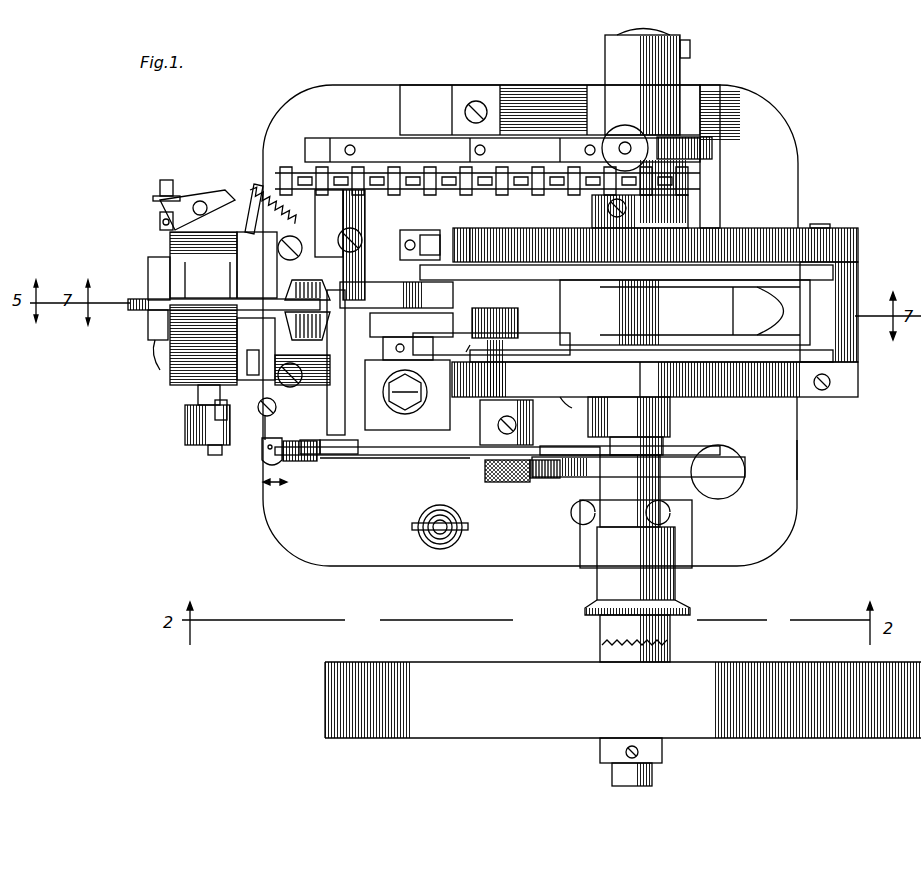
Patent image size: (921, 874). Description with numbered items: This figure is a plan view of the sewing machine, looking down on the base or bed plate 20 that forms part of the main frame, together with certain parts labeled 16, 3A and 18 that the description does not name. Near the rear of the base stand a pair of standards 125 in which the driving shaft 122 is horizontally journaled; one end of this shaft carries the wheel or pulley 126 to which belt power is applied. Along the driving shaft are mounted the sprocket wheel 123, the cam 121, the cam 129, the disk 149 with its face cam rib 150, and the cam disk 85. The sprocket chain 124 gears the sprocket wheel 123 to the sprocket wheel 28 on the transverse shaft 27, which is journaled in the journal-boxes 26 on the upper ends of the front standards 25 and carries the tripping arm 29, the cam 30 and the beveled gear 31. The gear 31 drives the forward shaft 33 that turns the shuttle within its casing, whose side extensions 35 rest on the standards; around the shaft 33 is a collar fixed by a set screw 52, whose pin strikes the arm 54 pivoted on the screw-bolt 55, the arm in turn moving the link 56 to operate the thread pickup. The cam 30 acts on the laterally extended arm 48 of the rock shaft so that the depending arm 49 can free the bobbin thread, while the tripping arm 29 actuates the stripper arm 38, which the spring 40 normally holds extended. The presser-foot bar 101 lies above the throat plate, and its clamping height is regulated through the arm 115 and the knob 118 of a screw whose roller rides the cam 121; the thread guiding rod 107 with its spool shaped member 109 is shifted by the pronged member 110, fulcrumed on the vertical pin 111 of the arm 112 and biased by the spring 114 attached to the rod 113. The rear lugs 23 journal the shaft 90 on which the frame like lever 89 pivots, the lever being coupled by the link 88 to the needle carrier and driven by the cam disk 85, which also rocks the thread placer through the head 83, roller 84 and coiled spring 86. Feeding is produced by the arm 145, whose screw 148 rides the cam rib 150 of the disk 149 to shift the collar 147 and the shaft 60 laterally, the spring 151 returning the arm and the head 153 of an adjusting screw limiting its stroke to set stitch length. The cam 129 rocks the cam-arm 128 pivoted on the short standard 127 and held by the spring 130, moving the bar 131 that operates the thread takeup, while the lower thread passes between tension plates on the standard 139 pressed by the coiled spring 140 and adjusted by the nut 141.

The housing 16 is at (272, 140).
The base or bed plate 20 is at (785, 493).
The tripping arm 29 is at (251, 484).
The standards 125 is at (685, 78).
The arm 115 is at (420, 148).
The sprocket chain 124 is at (537, 170).
The sprocket wheel 123 is at (700, 188).
The disk or knob 118 is at (630, 138).
The cam 121 is at (712, 150).
The lugs 23 is at (858, 245).
The cam disk 85 is at (738, 235).
The shaft 90 is at (820, 224).
The frame like lever 89 is at (490, 272).
The driving shaft 122 is at (660, 316).
The disk 149 is at (655, 379).
The cam rib 150 is at (572, 405).
The screw 148 is at (590, 418).
The bar 131 is at (700, 446).
The cam-arm 128 is at (745, 466).
The short standard 127 is at (724, 496).
The arm 145 is at (470, 456).
The spring 130 is at (525, 482).
The cam 129 is at (565, 478).
The standard 139 is at (420, 545).
The coiled spring 140 is at (440, 550).
The nut 141 is at (465, 545).
The wheel or pulley 126 is at (325, 691).
The set screw 52 is at (280, 288).
The beveled gear 31 is at (290, 330).
The bracket 3A is at (185, 278).
The laterally extended arm 48 is at (140, 298).
The presser-foot bar 101 is at (150, 318).
The depending arm 49 is at (290, 292).
The arm 54 is at (285, 330).
The link 56 is at (240, 375).
The shaft 60 is at (200, 400).
The stripper arm 38 is at (210, 415).
The collar 147 is at (210, 435).
The extension 35 is at (232, 415).
The spring 151 is at (270, 430).
The spring 40 is at (280, 450).
The head 153 is at (290, 448).
The plate 18 is at (330, 452).
The cam 30 is at (360, 452).
The screw-bolt 55 is at (320, 272).
The arm 112 is at (252, 205).
The vertical pin 111 is at (200, 201).
The member 110 is at (190, 198).
The thread guiding rod 107 is at (165, 182).
The spool shaped member 109 is at (158, 214).
The rod 113 is at (248, 193).
The spring 114 is at (252, 188).
The shaft 27 is at (470, 292).
The sprocket wheel 28 is at (433, 348).
The standards 25 is at (445, 365).
The journal-box 26 is at (405, 232).
The coiled spring 86 is at (418, 237).
The head 83 is at (445, 238).
The roller 84 is at (453, 238).
The link 88 is at (418, 318).
The shaft 33 is at (478, 354).